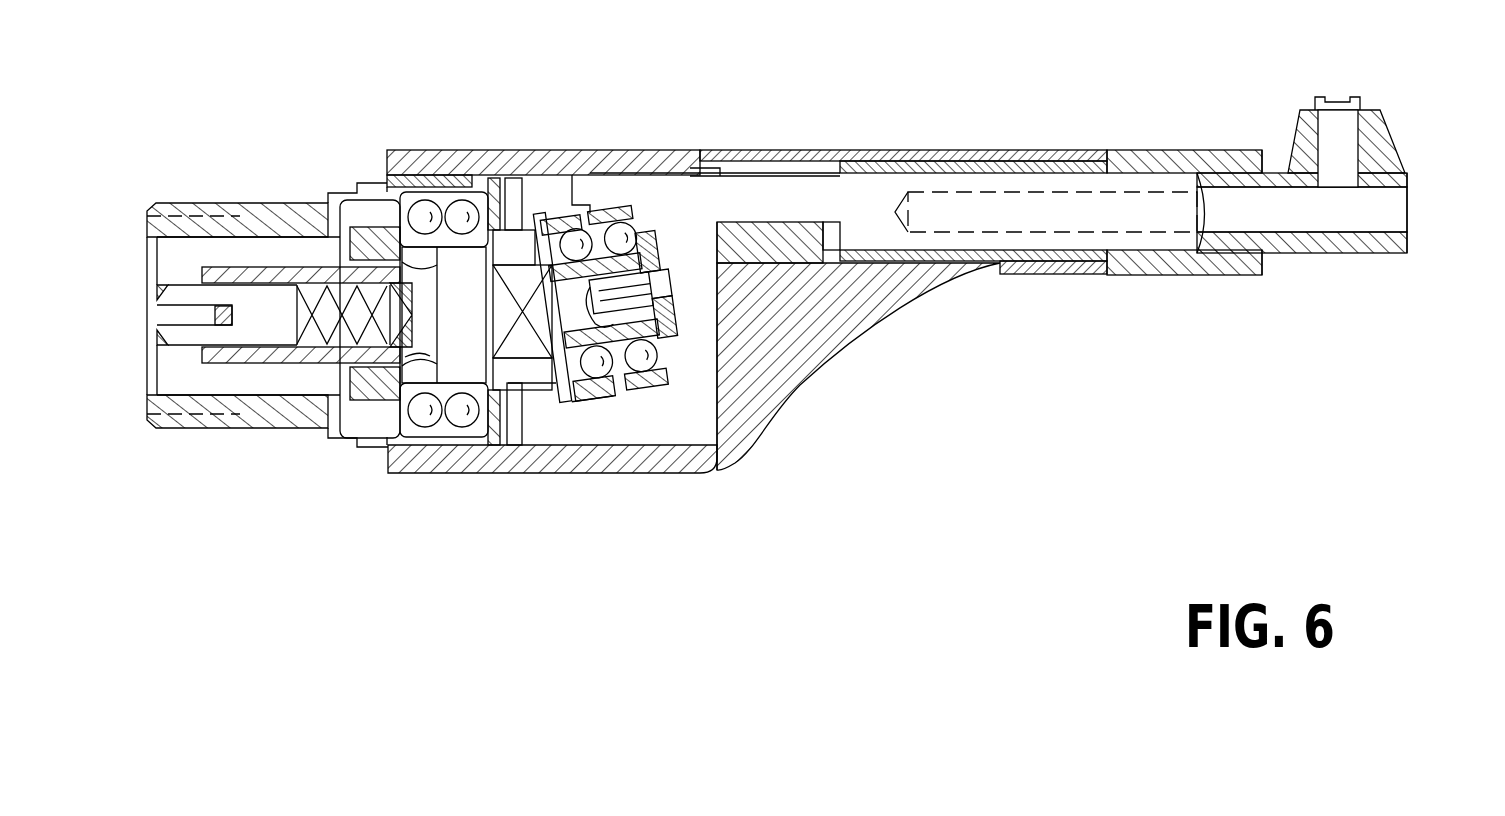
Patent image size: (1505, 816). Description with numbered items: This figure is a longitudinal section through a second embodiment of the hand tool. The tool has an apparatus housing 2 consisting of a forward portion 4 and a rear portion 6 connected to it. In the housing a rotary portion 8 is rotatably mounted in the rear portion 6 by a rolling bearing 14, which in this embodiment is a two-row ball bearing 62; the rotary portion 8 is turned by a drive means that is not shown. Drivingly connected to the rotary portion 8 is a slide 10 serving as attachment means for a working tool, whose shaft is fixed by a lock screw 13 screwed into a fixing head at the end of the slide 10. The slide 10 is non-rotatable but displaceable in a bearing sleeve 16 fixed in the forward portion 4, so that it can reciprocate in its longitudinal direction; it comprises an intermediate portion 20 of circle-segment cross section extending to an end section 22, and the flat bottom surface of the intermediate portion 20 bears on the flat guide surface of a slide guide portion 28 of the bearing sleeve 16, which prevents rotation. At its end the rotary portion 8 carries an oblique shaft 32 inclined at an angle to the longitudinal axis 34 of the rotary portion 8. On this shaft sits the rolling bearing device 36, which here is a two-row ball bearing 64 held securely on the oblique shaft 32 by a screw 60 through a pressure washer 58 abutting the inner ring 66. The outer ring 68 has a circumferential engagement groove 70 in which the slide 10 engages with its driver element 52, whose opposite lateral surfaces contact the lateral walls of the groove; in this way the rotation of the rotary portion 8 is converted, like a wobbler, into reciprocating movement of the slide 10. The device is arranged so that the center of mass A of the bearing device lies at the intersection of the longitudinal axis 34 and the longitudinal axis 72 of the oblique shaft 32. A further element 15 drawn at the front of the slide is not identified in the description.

The apparatus housing 2 is at (747, 152).
The forward portion 4 is at (800, 337).
The rear portion 6 is at (347, 442).
The rotary portion 8 is at (512, 383).
The slide 10 is at (815, 175).
The lock screw 13 is at (1340, 170).
The rolling bearing 14 is at (384, 216).
The front sight 15 is at (1386, 160).
The bearing sleeve 16 is at (1180, 263).
The intermediate portion 20 is at (802, 211).
The end section 22 is at (643, 250).
The slide guide portion 28 is at (800, 248).
The oblique shaft 32 is at (686, 262).
The longitudinal axis 34 is at (455, 330).
The rolling bearing device 36 is at (590, 408).
The driver element 52 is at (592, 218).
The pressure washer 58 is at (672, 392).
The screw 60 is at (662, 320).
The two-row ball bearing 62 is at (438, 440).
The two-row ball bearing 64 is at (550, 232).
The inner ring 66 is at (640, 246).
The outer ring 68 is at (646, 396).
The circumferential engagement groove 70 is at (623, 396).
The longitudinal axis 72 is at (745, 345).
The center of mass A is at (657, 295).